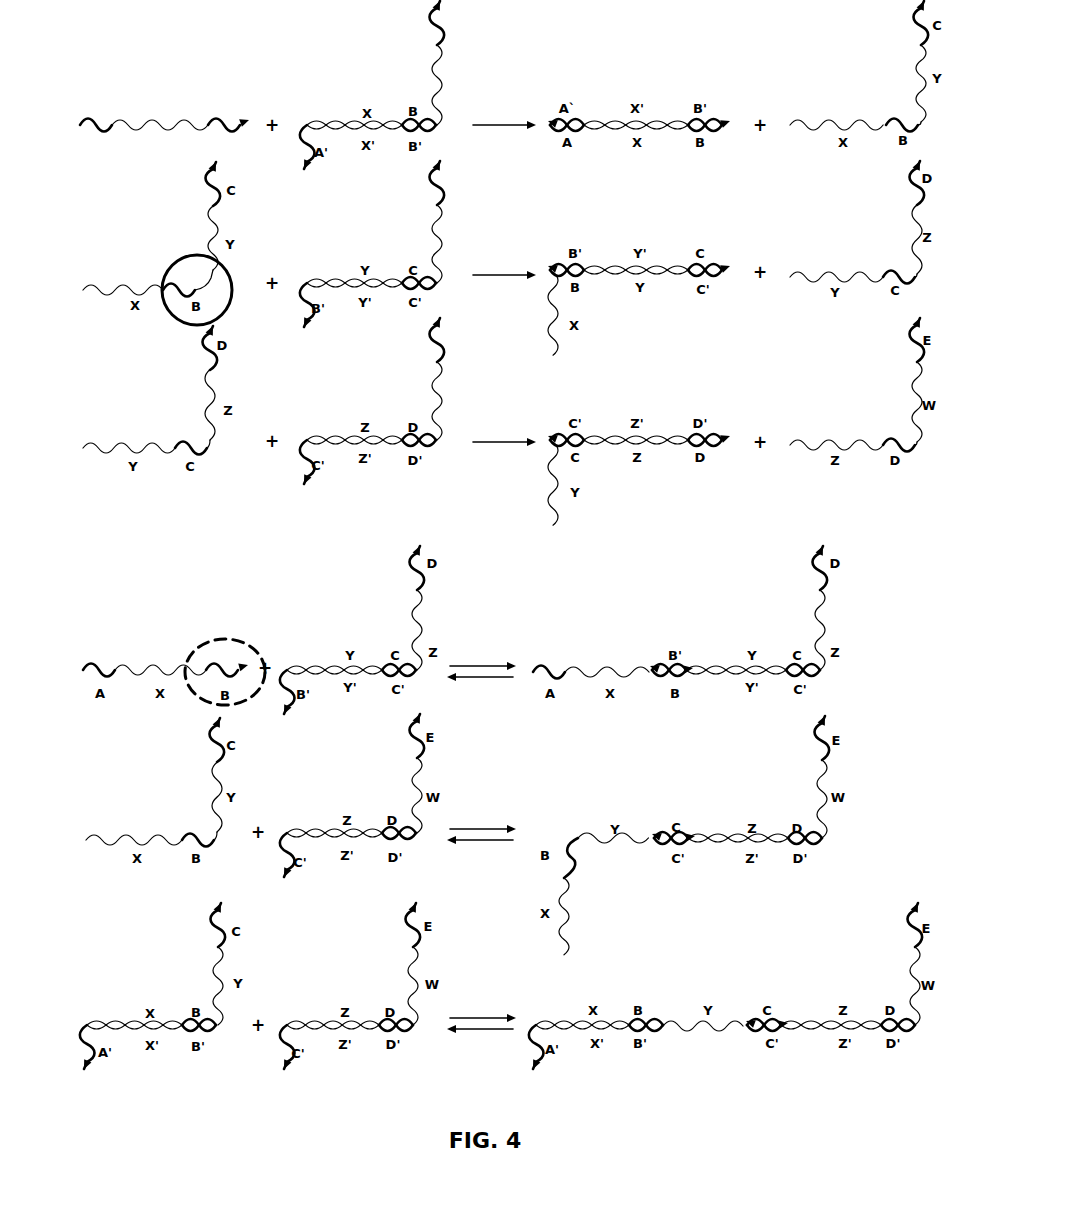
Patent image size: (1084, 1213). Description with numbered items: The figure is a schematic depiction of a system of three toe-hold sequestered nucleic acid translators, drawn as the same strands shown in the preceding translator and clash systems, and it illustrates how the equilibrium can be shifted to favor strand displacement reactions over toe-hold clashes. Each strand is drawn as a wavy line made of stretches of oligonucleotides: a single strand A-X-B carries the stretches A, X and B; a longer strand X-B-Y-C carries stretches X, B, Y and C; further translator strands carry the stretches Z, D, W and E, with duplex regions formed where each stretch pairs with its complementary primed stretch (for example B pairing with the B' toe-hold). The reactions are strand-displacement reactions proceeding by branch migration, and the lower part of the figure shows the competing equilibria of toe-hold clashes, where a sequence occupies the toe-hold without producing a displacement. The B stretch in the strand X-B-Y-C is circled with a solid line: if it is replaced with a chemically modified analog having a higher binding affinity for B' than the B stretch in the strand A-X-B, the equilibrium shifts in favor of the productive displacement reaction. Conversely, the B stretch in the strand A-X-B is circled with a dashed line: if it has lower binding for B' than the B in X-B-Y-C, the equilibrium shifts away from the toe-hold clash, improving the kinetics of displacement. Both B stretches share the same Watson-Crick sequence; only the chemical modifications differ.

The A stretch of oligonucleotides A is at (96, 137).
The B stretch of oligonucleotides B is at (229, 135).
The C stretch of oligonucleotides C is at (446, 22).
The D stretch of oligonucleotides D is at (442, 182).
The E stretch of oligonucleotides E is at (441, 339).
The W stretch of oligonucleotides W is at (444, 401).
The X stretch of oligonucleotides X is at (160, 137).
The Y stretch of oligonucleotides Y is at (446, 85).
The Z stretch of oligonucleotides Z is at (443, 244).